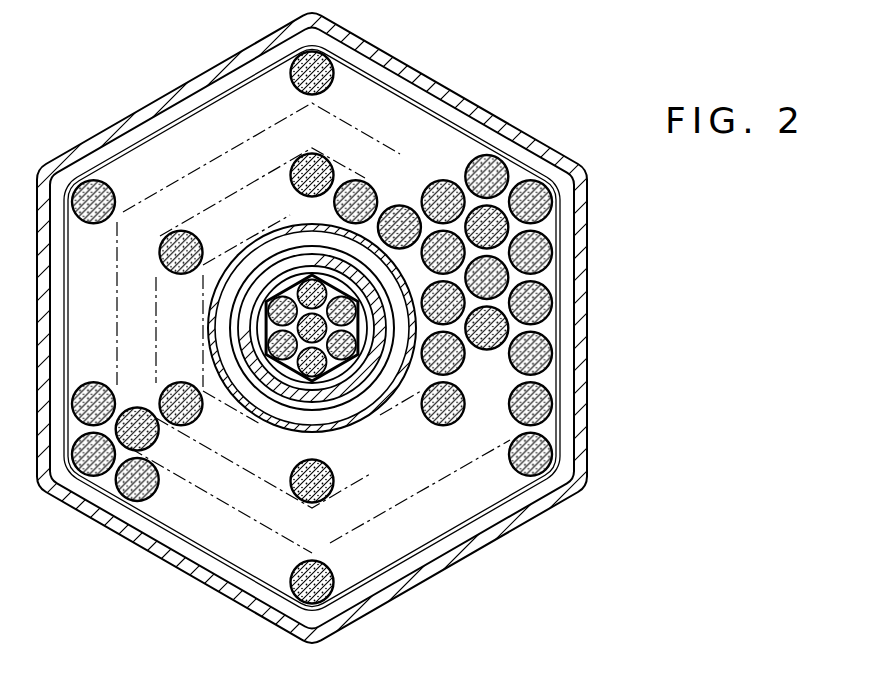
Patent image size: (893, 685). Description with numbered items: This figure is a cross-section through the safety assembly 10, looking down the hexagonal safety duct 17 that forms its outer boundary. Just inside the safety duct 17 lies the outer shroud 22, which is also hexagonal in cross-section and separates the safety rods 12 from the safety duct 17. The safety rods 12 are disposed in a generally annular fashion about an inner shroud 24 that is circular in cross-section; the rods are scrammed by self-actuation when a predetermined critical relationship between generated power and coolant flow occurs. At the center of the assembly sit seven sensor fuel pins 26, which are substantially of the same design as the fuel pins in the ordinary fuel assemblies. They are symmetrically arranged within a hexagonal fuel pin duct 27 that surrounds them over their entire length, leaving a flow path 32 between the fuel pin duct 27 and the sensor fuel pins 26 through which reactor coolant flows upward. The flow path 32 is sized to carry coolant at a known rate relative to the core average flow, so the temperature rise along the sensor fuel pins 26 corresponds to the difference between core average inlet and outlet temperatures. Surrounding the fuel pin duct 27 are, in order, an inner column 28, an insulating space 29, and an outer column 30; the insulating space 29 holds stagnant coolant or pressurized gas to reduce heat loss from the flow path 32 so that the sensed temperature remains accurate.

The safety assembly 10 is at (403, 46).
The safety rods 12 is at (313, 62).
The safety duct 17 is at (488, 110).
The outer shroud 22 is at (558, 262).
The inner shroud 24 is at (283, 432).
The sensor fuel pins 26 is at (290, 291).
The fuel pin duct 27 is at (285, 292).
The inner column 28 is at (262, 318).
The insulating space 29 is at (333, 397).
The outer column 30 is at (370, 392).
The flow path 32 is at (268, 330).